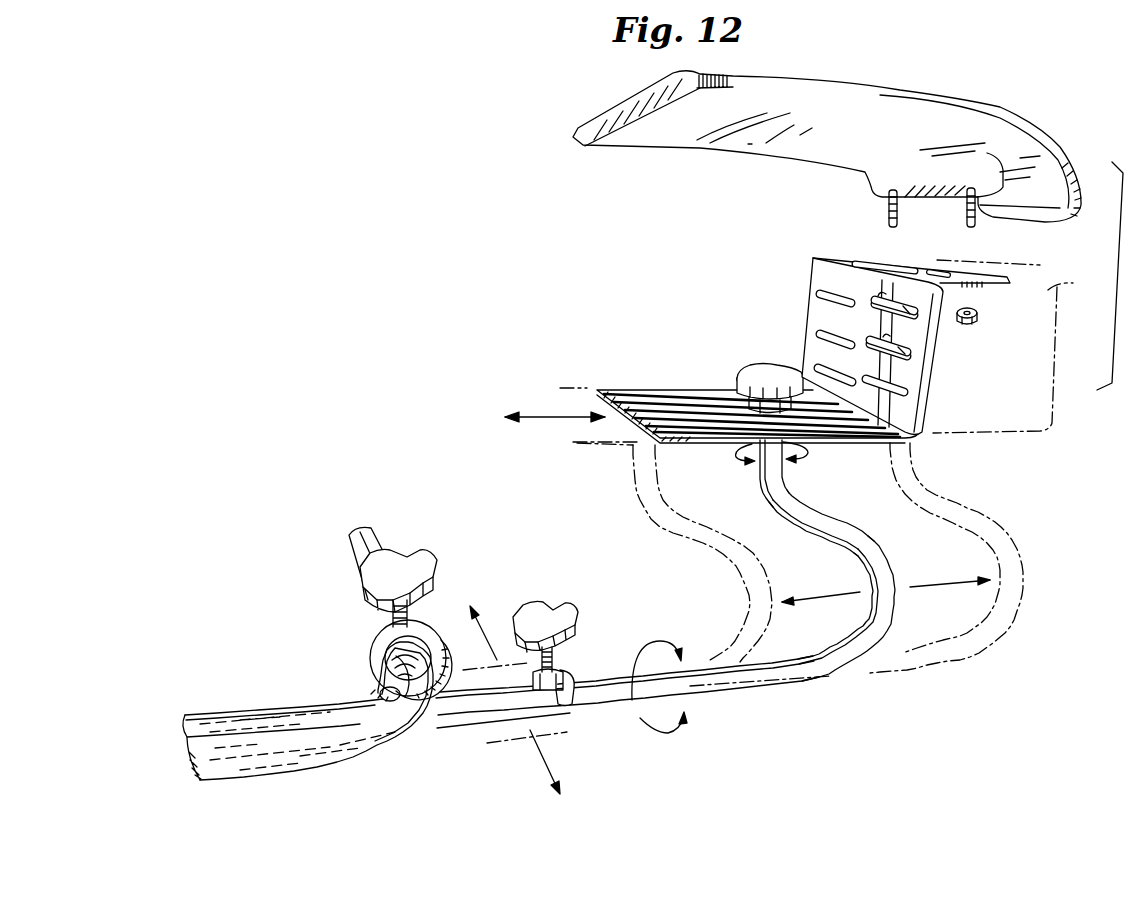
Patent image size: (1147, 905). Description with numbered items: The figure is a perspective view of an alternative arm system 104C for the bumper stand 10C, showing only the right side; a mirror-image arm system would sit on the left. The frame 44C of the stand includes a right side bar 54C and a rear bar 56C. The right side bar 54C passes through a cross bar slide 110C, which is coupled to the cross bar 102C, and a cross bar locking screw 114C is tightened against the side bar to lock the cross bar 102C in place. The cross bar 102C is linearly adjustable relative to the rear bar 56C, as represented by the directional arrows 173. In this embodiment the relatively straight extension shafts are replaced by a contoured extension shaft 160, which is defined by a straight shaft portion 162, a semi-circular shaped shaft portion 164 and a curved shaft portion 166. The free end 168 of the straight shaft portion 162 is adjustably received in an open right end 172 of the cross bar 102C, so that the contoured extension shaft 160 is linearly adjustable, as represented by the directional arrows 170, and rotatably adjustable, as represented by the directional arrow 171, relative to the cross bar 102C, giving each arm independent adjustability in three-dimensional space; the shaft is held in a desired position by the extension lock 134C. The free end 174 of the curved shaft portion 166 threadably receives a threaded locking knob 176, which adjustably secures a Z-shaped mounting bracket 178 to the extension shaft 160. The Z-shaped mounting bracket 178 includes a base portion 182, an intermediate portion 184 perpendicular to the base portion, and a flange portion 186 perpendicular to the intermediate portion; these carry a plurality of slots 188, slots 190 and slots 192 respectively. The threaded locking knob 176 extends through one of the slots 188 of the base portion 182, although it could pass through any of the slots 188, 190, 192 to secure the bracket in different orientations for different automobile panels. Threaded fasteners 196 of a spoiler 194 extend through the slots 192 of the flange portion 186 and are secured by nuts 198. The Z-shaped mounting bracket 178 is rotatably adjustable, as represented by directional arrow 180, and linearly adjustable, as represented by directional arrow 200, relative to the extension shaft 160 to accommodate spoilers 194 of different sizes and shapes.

The bumper stand 10C is at (836, 150).
The spoiler 194 is at (861, 92).
The threaded fasteners 196 is at (970, 208).
The alternative arm system 104C is at (783, 311).
The base portion 182 is at (613, 390).
The slots 188 is at (657, 395).
The threaded locking knob 176 is at (768, 363).
The Z-shaped mounting bracket 178 is at (866, 329).
The flange portion 186 is at (817, 256).
The slots 192 is at (877, 262).
The intermediate portion 184 is at (907, 382).
The slots 190 is at (912, 352).
The nuts 198 is at (980, 321).
The directional arrow 200 is at (563, 420).
The contoured extension shaft 160 is at (603, 617).
The straight shaft portion 162 is at (745, 689).
The free end 174 is at (767, 477).
The curved shaft portion 166 is at (798, 512).
The semi-circular shaped shaft portion 164 is at (870, 550).
The directional arrow 180 is at (740, 448).
The directional arrows 170 is at (850, 598).
The directional arrow 171 is at (680, 710).
The directional arrows 173 is at (490, 637).
The open right end 172 is at (570, 710).
The extension lock 134C is at (557, 600).
The right side bar 54C is at (378, 532).
The cross bar locking screw 114C is at (423, 553).
The cross bar slide 110C is at (372, 648).
The frame 44C is at (359, 728).
The cross bar 102C is at (190, 715).
The free end 168 is at (350, 757).
The rear bar 56C is at (293, 762).